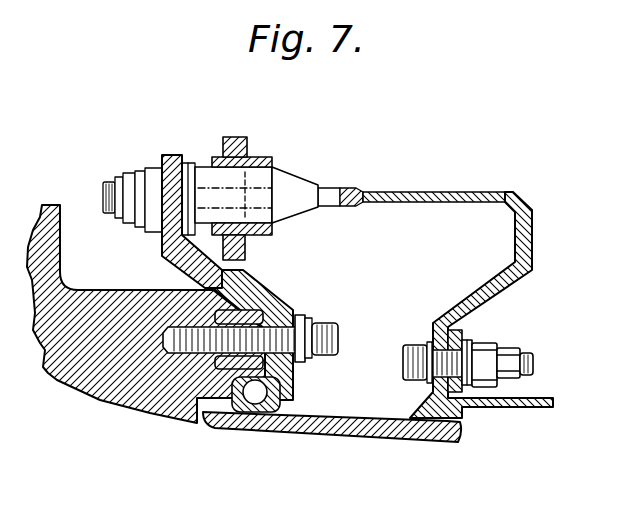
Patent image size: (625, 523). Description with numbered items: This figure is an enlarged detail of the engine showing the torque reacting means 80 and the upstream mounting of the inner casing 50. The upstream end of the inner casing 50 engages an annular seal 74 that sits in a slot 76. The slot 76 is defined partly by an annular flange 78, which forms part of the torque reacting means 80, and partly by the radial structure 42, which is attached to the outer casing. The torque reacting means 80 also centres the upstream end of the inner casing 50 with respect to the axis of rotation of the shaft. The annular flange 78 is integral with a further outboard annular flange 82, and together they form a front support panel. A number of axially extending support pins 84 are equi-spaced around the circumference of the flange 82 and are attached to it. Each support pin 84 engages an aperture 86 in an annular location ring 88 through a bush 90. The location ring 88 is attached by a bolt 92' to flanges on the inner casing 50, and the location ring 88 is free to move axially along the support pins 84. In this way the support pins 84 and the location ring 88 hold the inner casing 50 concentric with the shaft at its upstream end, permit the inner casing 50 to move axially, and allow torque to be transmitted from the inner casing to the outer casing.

The radial structure 42 is at (103, 389).
The inner casing 50 is at (404, 443).
The annular seal 74 is at (248, 414).
The slot 76 is at (285, 377).
The annular flange 78 is at (288, 296).
The torque reacting means 80 is at (330, 170).
The outboard annular flange 82 is at (166, 247).
The support pin 84 is at (290, 167).
The aperture 86 is at (273, 226).
The annular location ring 88 is at (414, 192).
The bush 90 is at (222, 137).
The bolt 92' is at (455, 340).